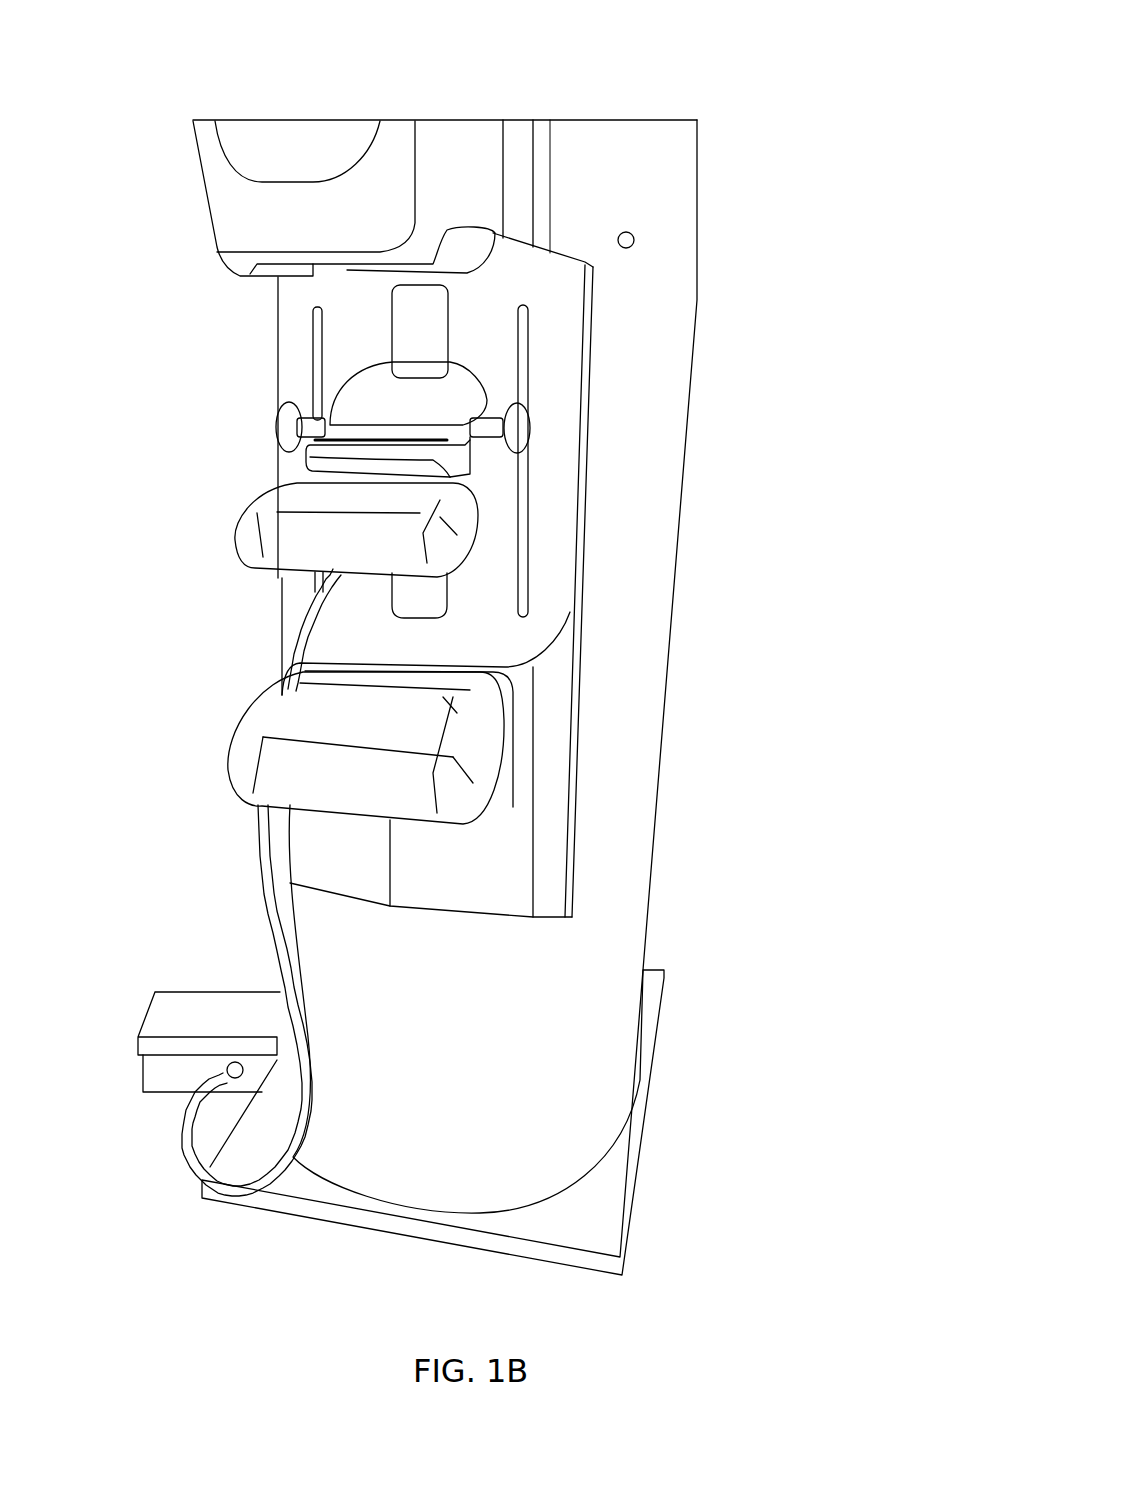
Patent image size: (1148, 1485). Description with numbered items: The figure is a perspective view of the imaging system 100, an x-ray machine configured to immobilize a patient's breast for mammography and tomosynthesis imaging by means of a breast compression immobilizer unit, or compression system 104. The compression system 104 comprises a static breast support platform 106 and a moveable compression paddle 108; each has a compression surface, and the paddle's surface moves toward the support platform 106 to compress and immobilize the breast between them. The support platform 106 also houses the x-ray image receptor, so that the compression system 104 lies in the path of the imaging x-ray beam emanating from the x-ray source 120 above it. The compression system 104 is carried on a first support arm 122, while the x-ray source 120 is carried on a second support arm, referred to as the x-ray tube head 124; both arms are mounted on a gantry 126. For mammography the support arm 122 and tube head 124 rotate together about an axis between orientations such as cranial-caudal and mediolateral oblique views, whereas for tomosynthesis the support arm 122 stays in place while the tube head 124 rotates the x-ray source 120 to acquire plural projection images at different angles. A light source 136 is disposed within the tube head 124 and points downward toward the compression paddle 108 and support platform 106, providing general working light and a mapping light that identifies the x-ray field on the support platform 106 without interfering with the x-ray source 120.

The imaging system 100 is at (812, 88).
The compression system 104 is at (185, 557).
The breast support platform 106 is at (495, 791).
The compression paddle 108 is at (460, 533).
The x-ray source 120 is at (445, 198).
The light source 136 is at (470, 192).
The first support arm 122 is at (553, 452).
The x-ray tube head 124 is at (543, 143).
The gantry 126 is at (634, 243).